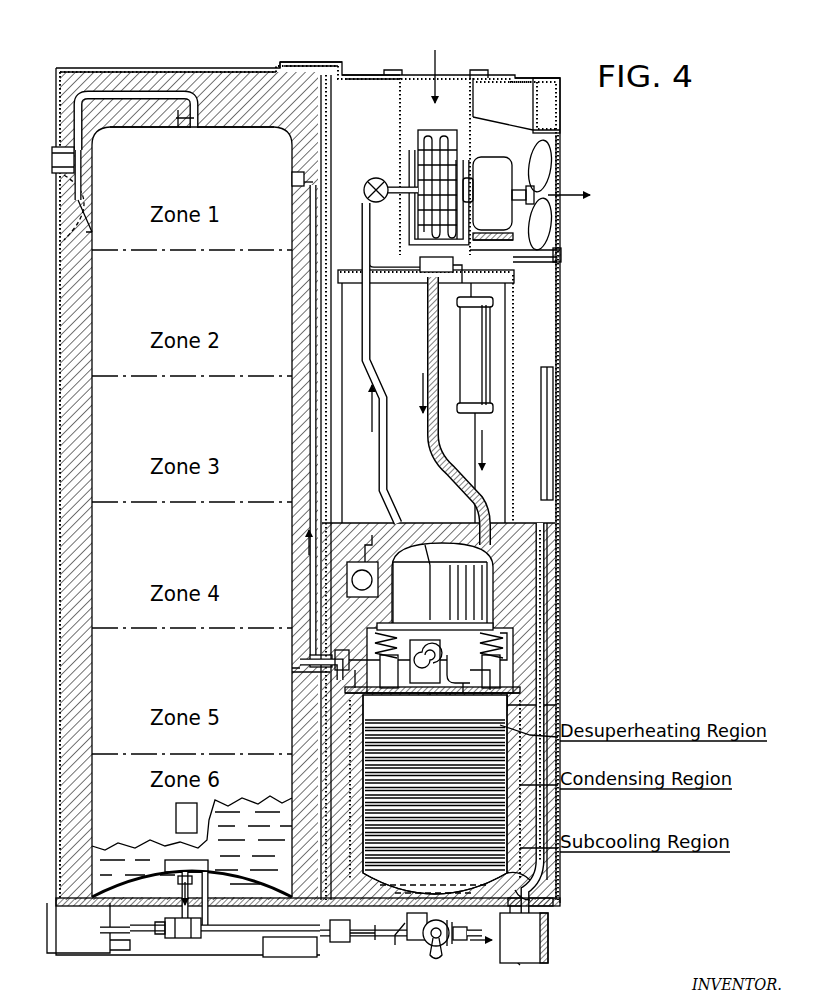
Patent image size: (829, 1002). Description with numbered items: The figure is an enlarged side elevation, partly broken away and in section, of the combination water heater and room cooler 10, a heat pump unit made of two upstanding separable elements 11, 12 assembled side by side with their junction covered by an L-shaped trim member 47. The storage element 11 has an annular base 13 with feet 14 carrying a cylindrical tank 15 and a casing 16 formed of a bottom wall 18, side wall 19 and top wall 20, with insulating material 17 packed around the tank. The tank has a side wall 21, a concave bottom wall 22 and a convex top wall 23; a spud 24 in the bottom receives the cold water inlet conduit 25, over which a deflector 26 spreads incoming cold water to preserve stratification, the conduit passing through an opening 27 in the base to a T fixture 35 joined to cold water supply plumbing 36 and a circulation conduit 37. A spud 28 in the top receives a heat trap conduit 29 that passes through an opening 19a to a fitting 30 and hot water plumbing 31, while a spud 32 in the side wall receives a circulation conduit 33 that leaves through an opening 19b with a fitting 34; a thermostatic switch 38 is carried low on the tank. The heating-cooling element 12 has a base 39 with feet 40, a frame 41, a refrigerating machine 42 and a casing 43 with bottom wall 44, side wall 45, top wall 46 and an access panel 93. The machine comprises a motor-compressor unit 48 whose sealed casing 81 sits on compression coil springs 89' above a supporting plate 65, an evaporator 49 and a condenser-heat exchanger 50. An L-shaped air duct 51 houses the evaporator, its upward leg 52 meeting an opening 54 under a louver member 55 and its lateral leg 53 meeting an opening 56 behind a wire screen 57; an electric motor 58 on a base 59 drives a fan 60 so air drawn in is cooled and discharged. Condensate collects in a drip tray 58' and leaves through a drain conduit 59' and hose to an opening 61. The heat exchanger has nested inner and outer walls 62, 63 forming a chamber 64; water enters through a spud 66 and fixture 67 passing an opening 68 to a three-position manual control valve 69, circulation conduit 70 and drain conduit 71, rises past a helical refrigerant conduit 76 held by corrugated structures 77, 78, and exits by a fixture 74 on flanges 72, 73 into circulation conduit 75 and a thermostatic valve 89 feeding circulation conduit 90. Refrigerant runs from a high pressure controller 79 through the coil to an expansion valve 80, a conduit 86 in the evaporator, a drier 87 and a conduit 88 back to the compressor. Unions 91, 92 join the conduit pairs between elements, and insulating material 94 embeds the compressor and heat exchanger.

The combination water heater and room cooler 10 is at (317, 31).
The element 11 is at (148, 67).
The element 12 is at (512, 75).
The base 13 is at (228, 931).
The feet 14 is at (110, 950).
The tank 15 is at (292, 318).
The casing 16 is at (62, 372).
The insulating material 17 is at (230, 80).
The bottom wall 18 is at (74, 903).
The side wall 19 is at (331, 130).
The opening 19a is at (62, 178).
The opening 19b is at (341, 655).
The top wall 20 is at (174, 68).
The side wall 21 is at (275, 802).
The bottom wall 22 is at (238, 875).
The top wall 23 is at (226, 128).
The spud 24 is at (178, 880).
The cold water inlet conduit 25 is at (190, 891).
The deflector 26 is at (165, 860).
The opening 27 is at (293, 455).
The spud 28 is at (180, 120).
The heat trap conduit 29 is at (139, 97).
The fitting 30 is at (64, 160).
The hot water plumbing 31 is at (90, 232).
The spud 32 is at (290, 178).
The circulation conduit 33 is at (322, 192).
The fitting 34 is at (312, 663).
The T fixture 35 is at (182, 939).
The cold water supply plumbing 36 is at (100, 931).
The circulation conduit 37 is at (290, 955).
The thermostatic switch 38 is at (176, 818).
The base 39 is at (395, 946).
The feet 40 is at (550, 940).
The frame 41 is at (345, 467).
The refrigerating machine 42 is at (413, 454).
The casing 43 is at (560, 323).
The bottom wall 44 is at (555, 905).
The side wall 45 is at (556, 581).
The top wall 46 is at (365, 73).
The trim member 47 is at (330, 62).
The motor-compressor unit 48 is at (424, 596).
The evaporator 49 is at (436, 132).
The condenser-heat exchanger 50 is at (345, 732).
The air duct 51 is at (500, 120).
The upwardly directed leg 52 is at (480, 91).
The laterally directed leg 53 is at (540, 125).
The opening 54 is at (474, 75).
The louver member 55 is at (400, 70).
The opening 56 is at (563, 254).
The wire screen 57 is at (565, 140).
The electric motor 58 is at (511, 203).
The drip tray 58' is at (424, 296).
The base 59 is at (447, 272).
The drain conduit 59' is at (426, 316).
The fan 60 is at (558, 173).
The opening 61 is at (510, 958).
The inner wall 62 is at (490, 705).
The outer wall 63 is at (530, 720).
The chamber 64 is at (496, 931).
The supporting plate 65 is at (432, 702).
The spud 66 is at (460, 942).
The fixture 67 is at (436, 948).
The opening 68 is at (418, 945).
The manual control valve 69 is at (447, 950).
The circulation conduit 70 is at (375, 945).
The drain conduit 71 is at (478, 941).
The flange 72 is at (560, 690).
The flange 73 is at (540, 705).
The fixture 74 is at (442, 705).
The circulation conduit 75 is at (520, 680).
The refrigerant conduit 76 is at (352, 757).
The inner corrugated structure 77 is at (545, 891).
The outer corrugated structure 78 is at (545, 873).
The high pressure controller 79 is at (346, 580).
The expansion valve 80 is at (378, 178).
The sealed casing 81 is at (426, 545).
The conduit 86 is at (460, 150).
The drier 87 is at (492, 345).
The conduit 88 is at (470, 520).
The thermostatic valve 89 is at (434, 666).
The compression coil springs 89' is at (546, 632).
The circulation conduit 90 is at (395, 650).
The union 91 is at (338, 944).
The union 92 is at (330, 672).
The panel 93 is at (555, 436).
The insulating material 94 is at (556, 533).